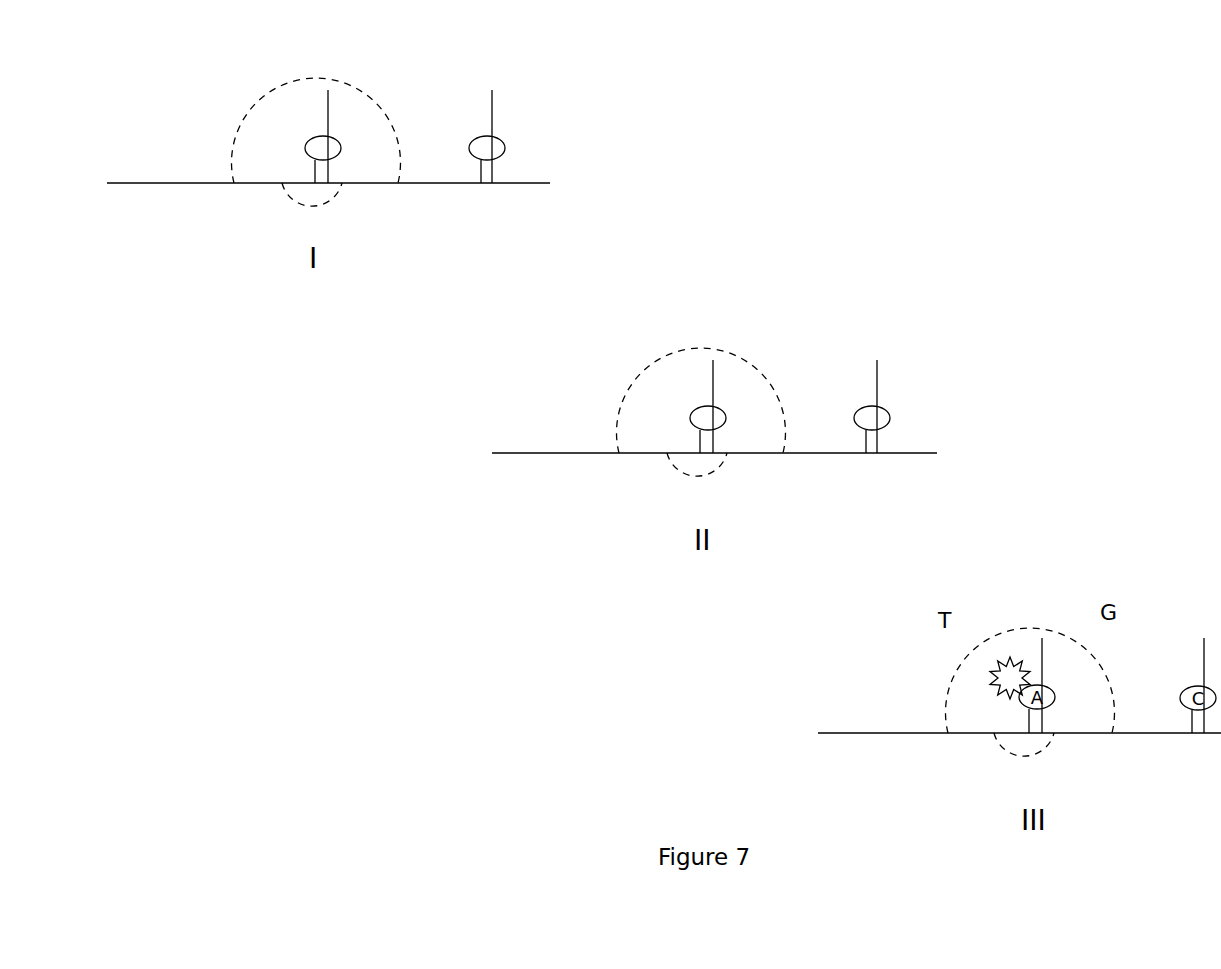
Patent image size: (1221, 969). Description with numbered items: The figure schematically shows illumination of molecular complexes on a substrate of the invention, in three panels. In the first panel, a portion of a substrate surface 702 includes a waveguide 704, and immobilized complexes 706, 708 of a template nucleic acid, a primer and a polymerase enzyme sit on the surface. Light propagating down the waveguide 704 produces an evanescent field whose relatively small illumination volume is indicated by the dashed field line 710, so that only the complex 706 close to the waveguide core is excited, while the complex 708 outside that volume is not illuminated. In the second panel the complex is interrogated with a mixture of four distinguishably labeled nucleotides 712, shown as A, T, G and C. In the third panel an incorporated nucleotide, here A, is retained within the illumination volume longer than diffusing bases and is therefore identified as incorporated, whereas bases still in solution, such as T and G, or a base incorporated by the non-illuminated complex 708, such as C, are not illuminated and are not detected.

The substrate surface 702 is at (141, 178).
The waveguide 704 is at (279, 196).
The immobilized complex 706 is at (344, 131).
The immobilized complex 708 is at (494, 131).
The dashed field line 710 is at (256, 107).
The nucleotides 712 is at (516, 377).